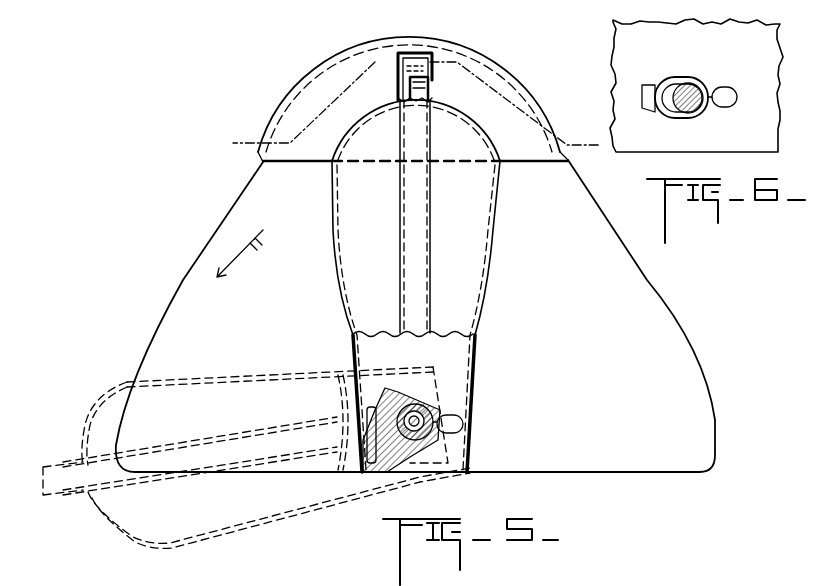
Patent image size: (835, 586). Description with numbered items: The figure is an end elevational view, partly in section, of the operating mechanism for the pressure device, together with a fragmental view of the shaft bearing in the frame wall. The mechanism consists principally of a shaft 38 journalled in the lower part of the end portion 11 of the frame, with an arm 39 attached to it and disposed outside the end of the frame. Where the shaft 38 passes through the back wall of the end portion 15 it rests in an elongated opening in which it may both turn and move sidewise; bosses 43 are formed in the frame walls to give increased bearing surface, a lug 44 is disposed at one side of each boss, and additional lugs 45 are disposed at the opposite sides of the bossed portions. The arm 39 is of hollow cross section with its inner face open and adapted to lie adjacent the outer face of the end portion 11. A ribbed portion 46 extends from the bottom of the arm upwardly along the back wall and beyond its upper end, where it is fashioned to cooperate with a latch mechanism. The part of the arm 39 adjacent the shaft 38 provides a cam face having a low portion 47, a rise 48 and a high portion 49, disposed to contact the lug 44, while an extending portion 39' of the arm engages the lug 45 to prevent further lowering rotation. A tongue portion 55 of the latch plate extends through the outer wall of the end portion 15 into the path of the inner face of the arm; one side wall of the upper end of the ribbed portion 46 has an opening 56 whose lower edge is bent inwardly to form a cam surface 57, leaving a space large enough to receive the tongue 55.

In FIG. 5, the end portion 11 is at (647, 280).
In FIG. 6, the end portion 11 is at (745, 148).
In FIG. 5, the end portion 15 is at (237, 150).
In FIG. 6, the shaft 38 is at (697, 108).
In FIG. 5, the arm 39 is at (441, 286).
In FIG. 5, the extending portion 39' is at (415, 482).
In FIG. 6, the boss 43 is at (690, 80).
In FIG. 5, the lug 44 is at (370, 407).
In FIG. 6, the lug 44 is at (647, 85).
In FIG. 5, the lug 45 is at (447, 417).
In FIG. 6, the lug 45 is at (730, 90).
In FIG. 5, the ribbed portion 46 is at (398, 202).
In FIG. 5, the low portion 47 is at (430, 400).
In FIG. 5, the rise 48 is at (403, 397).
In FIG. 5, the high portion 49 is at (392, 388).
In FIG. 5, the tongue portion 55 is at (403, 86).
In FIG. 5, the opening 56 is at (430, 60).
In FIG. 5, the cam surface 57 is at (427, 78).